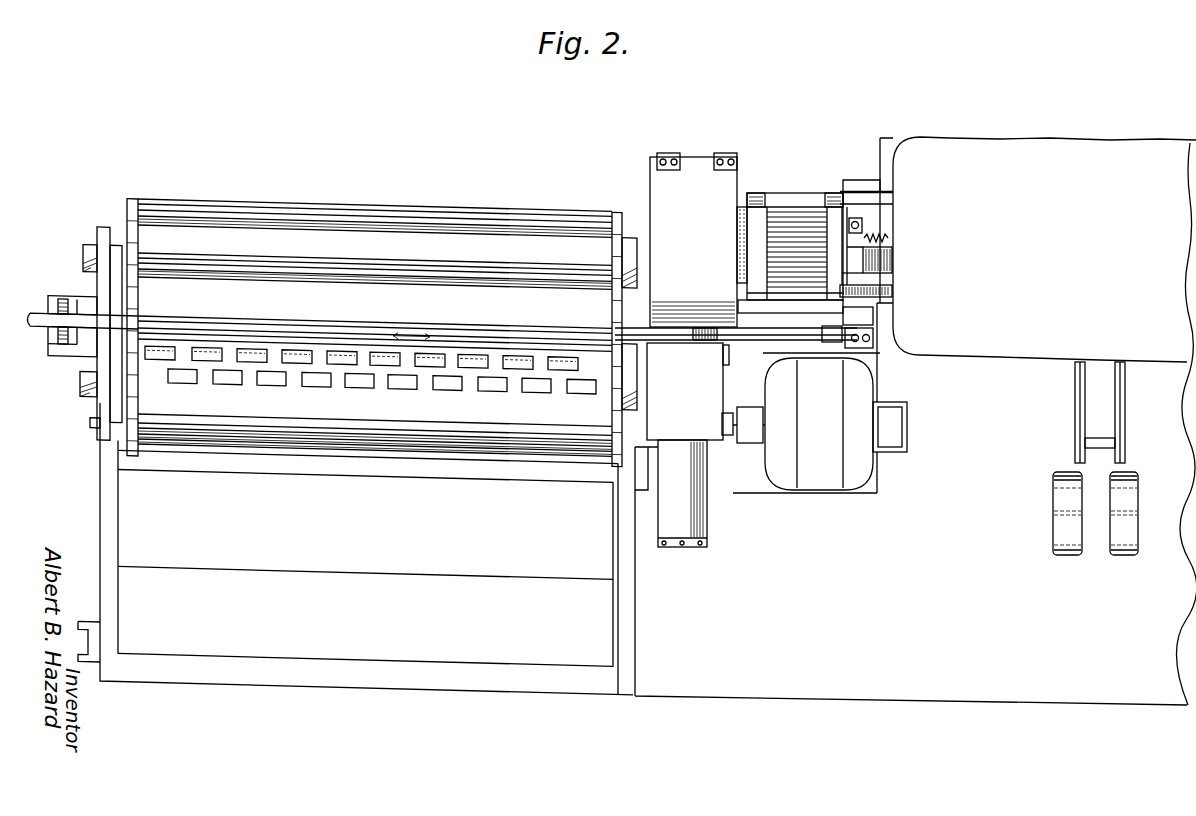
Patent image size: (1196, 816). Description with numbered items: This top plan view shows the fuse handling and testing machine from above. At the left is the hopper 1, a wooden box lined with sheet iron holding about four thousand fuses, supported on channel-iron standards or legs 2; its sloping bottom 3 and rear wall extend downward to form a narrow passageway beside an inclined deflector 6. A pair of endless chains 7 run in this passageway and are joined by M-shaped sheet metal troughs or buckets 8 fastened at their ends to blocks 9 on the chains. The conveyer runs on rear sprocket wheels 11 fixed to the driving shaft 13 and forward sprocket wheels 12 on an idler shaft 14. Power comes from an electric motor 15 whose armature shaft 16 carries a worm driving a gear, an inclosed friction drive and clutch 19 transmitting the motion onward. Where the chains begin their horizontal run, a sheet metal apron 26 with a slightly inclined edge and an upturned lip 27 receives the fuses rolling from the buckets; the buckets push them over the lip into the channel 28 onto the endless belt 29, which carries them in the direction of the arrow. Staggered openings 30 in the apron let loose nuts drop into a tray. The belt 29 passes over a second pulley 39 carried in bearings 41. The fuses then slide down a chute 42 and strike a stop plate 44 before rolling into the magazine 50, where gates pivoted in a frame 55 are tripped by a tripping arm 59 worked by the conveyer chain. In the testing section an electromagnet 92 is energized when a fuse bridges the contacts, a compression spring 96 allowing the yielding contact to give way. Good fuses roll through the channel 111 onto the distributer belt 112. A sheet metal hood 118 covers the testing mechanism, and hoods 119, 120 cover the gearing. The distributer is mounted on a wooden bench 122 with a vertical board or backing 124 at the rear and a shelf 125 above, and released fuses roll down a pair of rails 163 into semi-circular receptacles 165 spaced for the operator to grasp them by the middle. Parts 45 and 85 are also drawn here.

The hopper 1 is at (100, 517).
The standards or legs 2 is at (86, 620).
The bottom of the hopper 3 is at (206, 645).
The inclined deflector 6 is at (118, 533).
The endless chains 7 is at (133, 203).
The troughs or buckets 8 is at (339, 212).
The blocks 9 is at (138, 411).
The rear sprocket wheels 11 is at (124, 243).
The forward sprocket wheels 12 is at (118, 399).
The driving shaft 13 is at (428, 262).
The idler shaft 14 is at (228, 381).
The electric motor 15 is at (828, 479).
The armature shaft 16 is at (735, 437).
The friction drive and clutch 19 is at (708, 517).
The sheet metal apron 26 is at (124, 424).
The lip 27 is at (559, 320).
The channel 28 is at (349, 323).
The endless belt 29 is at (286, 323).
The openings 30 is at (355, 381).
The second pulley 39 is at (37, 330).
The bearings 41 is at (82, 299).
The chute 42 is at (718, 337).
The stop plate 44 is at (830, 343).
The bracket 45 is at (867, 355).
The magazine 50 is at (843, 325).
The frame 55 is at (787, 313).
The tripping arm 59 is at (740, 302).
The worm gear 85 is at (893, 293).
The electromagnet 92 is at (893, 259).
The compression spring 96 is at (876, 238).
The channel 111 is at (876, 170).
The distributer belt 112 is at (896, 203).
The sheet metal hood 118 is at (791, 205).
The hood 119 is at (660, 186).
The hood 120 is at (708, 390).
The bench or table 122 is at (963, 690).
The vertical board or backing 124 is at (1190, 166).
The shelf 125 is at (1006, 355).
The rails 163 is at (1082, 397).
The semi-circular receptacles 165 is at (1115, 554).